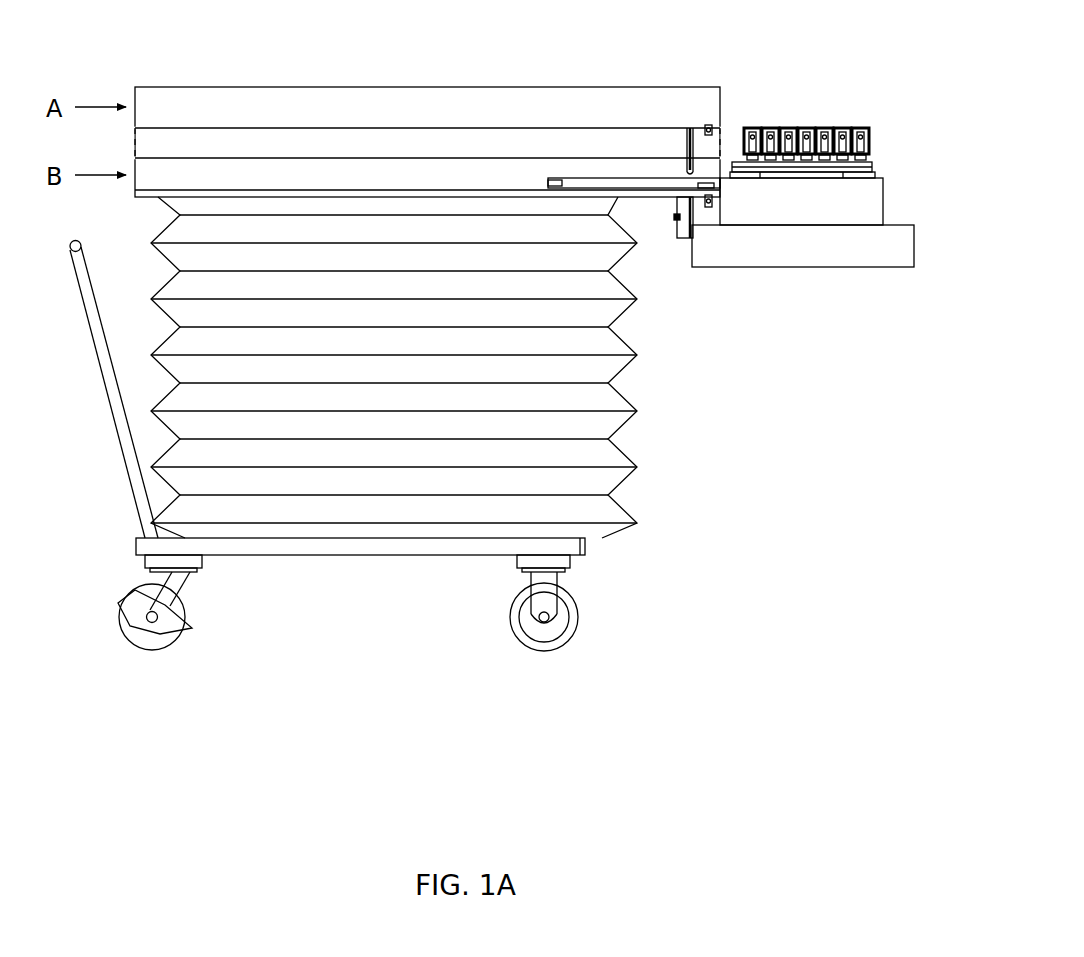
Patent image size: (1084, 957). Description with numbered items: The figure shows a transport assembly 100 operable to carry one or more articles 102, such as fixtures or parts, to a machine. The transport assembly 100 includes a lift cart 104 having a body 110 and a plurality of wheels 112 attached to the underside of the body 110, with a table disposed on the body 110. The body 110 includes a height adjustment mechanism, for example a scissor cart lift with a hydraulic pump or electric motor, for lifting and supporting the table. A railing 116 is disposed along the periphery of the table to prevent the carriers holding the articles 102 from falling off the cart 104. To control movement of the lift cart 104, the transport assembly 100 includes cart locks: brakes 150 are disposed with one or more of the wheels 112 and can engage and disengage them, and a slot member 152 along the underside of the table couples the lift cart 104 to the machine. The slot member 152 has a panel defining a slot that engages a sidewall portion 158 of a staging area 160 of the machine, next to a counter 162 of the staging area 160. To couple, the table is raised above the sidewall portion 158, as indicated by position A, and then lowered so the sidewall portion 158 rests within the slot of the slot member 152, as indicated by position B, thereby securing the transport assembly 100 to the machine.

The transport assembly 100 is at (131, 70).
The article 102 is at (844, 121).
The lift cart 104 is at (661, 427).
The body 110 is at (636, 357).
The wheels 112 is at (580, 620).
The railing 116 is at (413, 96).
The brakes 150 is at (172, 627).
The slot member 152 is at (692, 128).
The sidewall portion 158 is at (693, 252).
The staging area 160 is at (886, 194).
The counter 162 is at (801, 201).